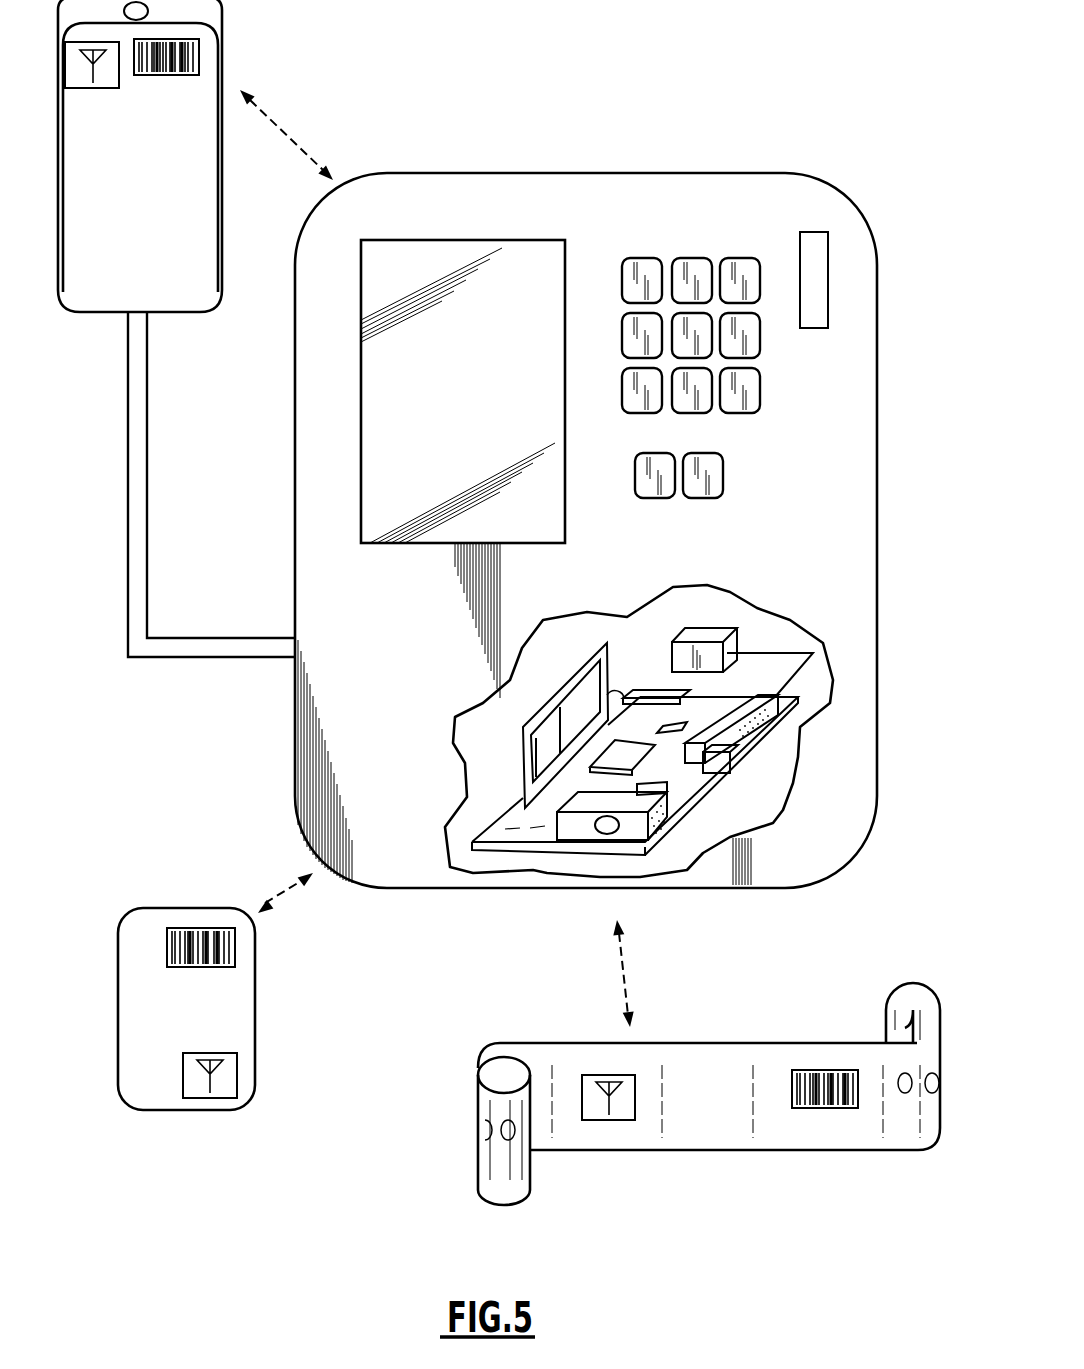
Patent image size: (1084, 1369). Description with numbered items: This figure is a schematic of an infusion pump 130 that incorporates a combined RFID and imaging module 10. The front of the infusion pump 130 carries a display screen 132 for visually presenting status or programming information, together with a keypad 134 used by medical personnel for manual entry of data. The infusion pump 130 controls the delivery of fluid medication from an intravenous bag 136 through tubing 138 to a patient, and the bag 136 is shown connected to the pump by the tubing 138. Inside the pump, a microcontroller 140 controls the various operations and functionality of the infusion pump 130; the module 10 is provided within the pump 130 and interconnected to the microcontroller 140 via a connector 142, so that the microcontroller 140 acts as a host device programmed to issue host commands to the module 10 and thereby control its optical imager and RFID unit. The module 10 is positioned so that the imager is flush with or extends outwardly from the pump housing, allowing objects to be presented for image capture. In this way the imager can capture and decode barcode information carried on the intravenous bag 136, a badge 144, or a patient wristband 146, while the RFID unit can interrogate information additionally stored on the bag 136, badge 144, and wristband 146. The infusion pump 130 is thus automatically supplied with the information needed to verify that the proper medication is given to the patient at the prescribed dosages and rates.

The combined RFID and imaging module 10 is at (767, 815).
The infusion pump 130 is at (510, 102).
The display screen 132 is at (490, 403).
The keypad 134 is at (765, 447).
The intravenous bag 136 is at (167, 188).
The tubing 138 is at (127, 493).
The microcontroller 140 is at (712, 637).
The connector 142 is at (802, 760).
The badge 144 is at (208, 1023).
The patient wristband 146 is at (728, 1112).